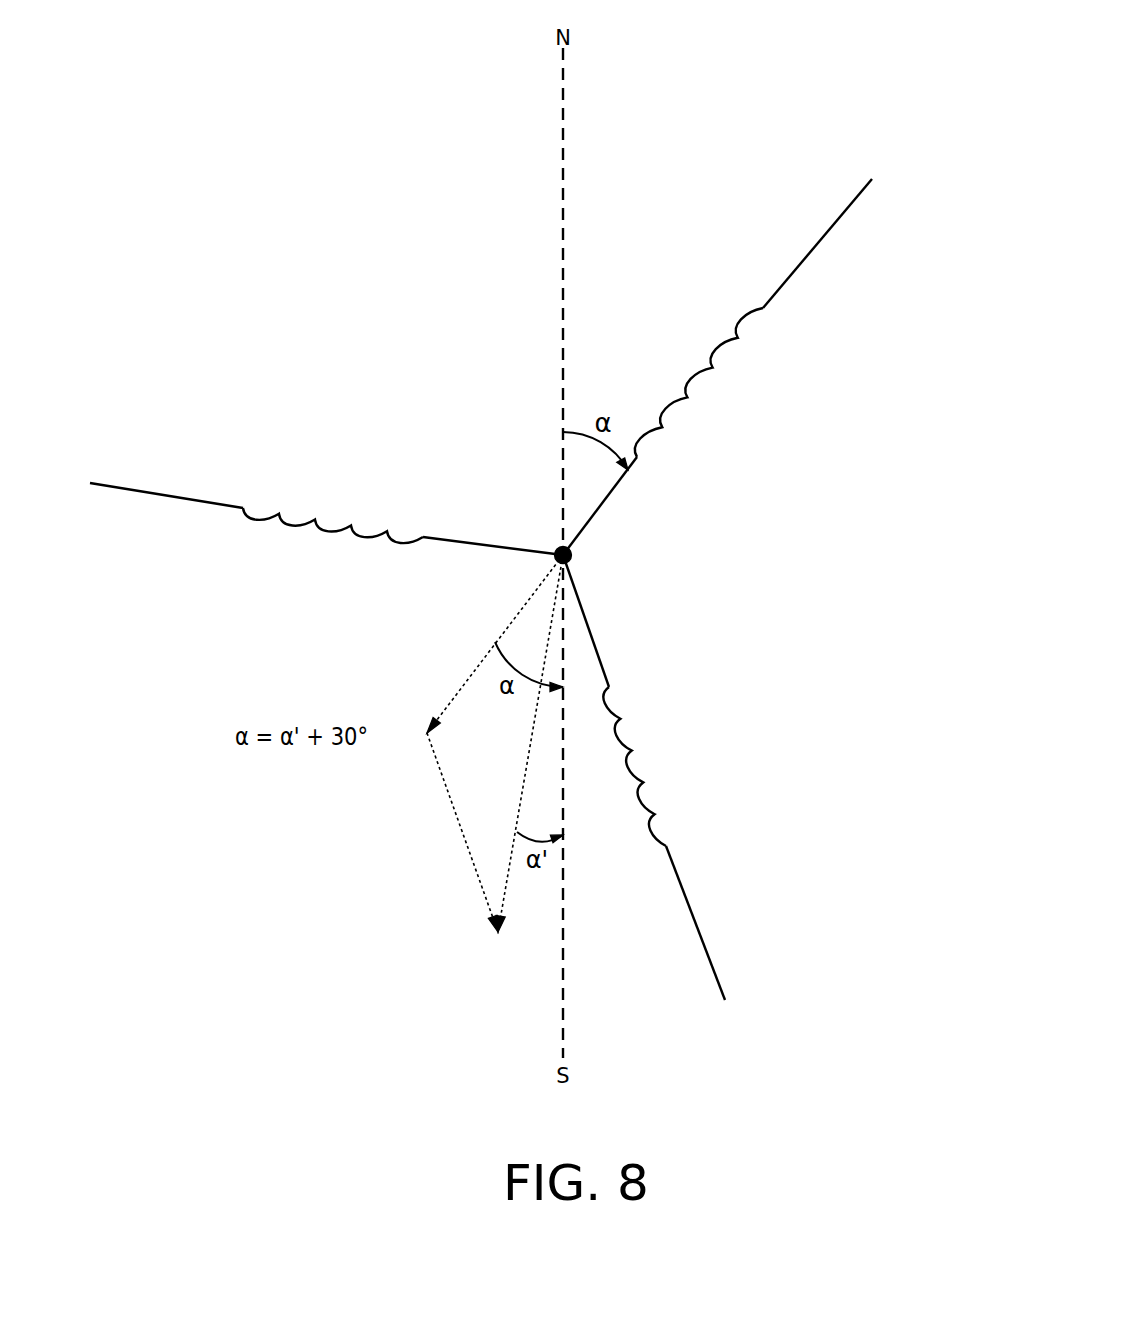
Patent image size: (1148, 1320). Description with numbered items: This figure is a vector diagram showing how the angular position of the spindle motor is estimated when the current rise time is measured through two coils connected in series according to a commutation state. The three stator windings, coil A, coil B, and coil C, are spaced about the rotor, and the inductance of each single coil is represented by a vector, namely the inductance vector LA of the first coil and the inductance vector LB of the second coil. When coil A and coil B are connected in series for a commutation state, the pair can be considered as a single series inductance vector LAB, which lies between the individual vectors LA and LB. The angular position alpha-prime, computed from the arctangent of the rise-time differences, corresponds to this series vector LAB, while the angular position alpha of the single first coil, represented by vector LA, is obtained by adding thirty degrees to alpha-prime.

The coil φ A is at (717, 367).
The coil φ B is at (644, 777).
The coil φ C is at (326, 519).
The inductance vector of coil φA LA is at (480, 612).
The inductance vector of coil φB LB is at (450, 827).
The inductance vector of series coils φA-φB LAB is at (502, 737).